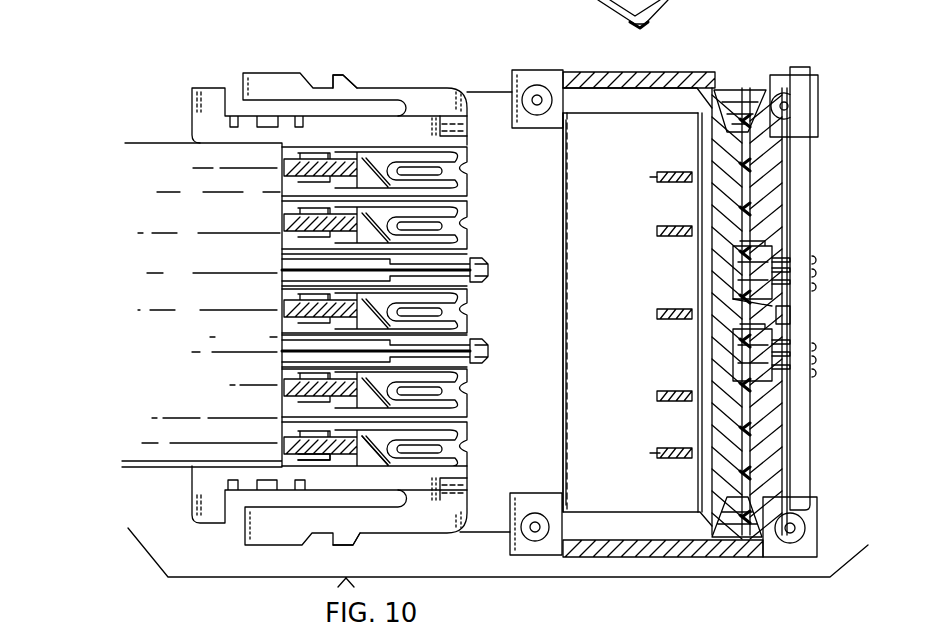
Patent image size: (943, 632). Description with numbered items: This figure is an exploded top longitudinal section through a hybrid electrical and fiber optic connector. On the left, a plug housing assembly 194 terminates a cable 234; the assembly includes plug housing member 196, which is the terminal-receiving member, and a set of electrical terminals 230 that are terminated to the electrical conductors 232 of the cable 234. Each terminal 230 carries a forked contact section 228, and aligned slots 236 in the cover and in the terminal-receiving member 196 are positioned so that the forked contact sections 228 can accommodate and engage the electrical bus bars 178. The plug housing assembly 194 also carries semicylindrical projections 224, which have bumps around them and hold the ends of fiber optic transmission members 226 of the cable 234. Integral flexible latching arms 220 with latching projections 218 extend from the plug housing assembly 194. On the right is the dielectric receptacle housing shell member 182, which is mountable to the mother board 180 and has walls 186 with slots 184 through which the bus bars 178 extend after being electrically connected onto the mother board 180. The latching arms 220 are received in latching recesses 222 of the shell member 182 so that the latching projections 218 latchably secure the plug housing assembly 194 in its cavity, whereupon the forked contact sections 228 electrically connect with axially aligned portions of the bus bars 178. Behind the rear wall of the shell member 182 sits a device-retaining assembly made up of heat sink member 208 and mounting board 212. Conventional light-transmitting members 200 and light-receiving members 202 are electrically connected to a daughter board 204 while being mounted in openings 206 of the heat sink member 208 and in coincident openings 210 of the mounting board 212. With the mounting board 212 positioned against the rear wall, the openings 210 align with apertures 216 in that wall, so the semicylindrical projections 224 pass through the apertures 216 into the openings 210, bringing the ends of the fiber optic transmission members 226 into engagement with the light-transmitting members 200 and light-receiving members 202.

The electrical bus bars 178 is at (660, 178).
The mother board 180 is at (678, 14).
The dielectric receptacle housing shell member 182 is at (693, 68).
The slots 184 is at (673, 183).
The walls 186 is at (562, 315).
The plug housing assembly 194 is at (336, 44).
The plug housing member 196 is at (427, 137).
The light-transmitting members 200 is at (763, 257).
The light-receiving members 202 is at (763, 373).
The daughter board 204 is at (800, 466).
The openings 206 is at (783, 317).
The heat sink member 208 is at (790, 188).
The openings 210 is at (767, 214).
The mounting board 212 is at (737, 112).
The apertures 216 is at (717, 283).
The latching projections 218 is at (336, 83).
The flexible latching arms 220 is at (393, 97).
The latching recesses 222 is at (586, 78).
The semicylindrical projections 224 is at (470, 253).
The fiber optic transmission members 226 is at (458, 313).
The forked contact sections 228 is at (452, 435).
The electrical terminals 230 is at (365, 452).
The electrical conductors 232 is at (335, 466).
The cable 234 is at (220, 412).
The slots 236 is at (462, 175).